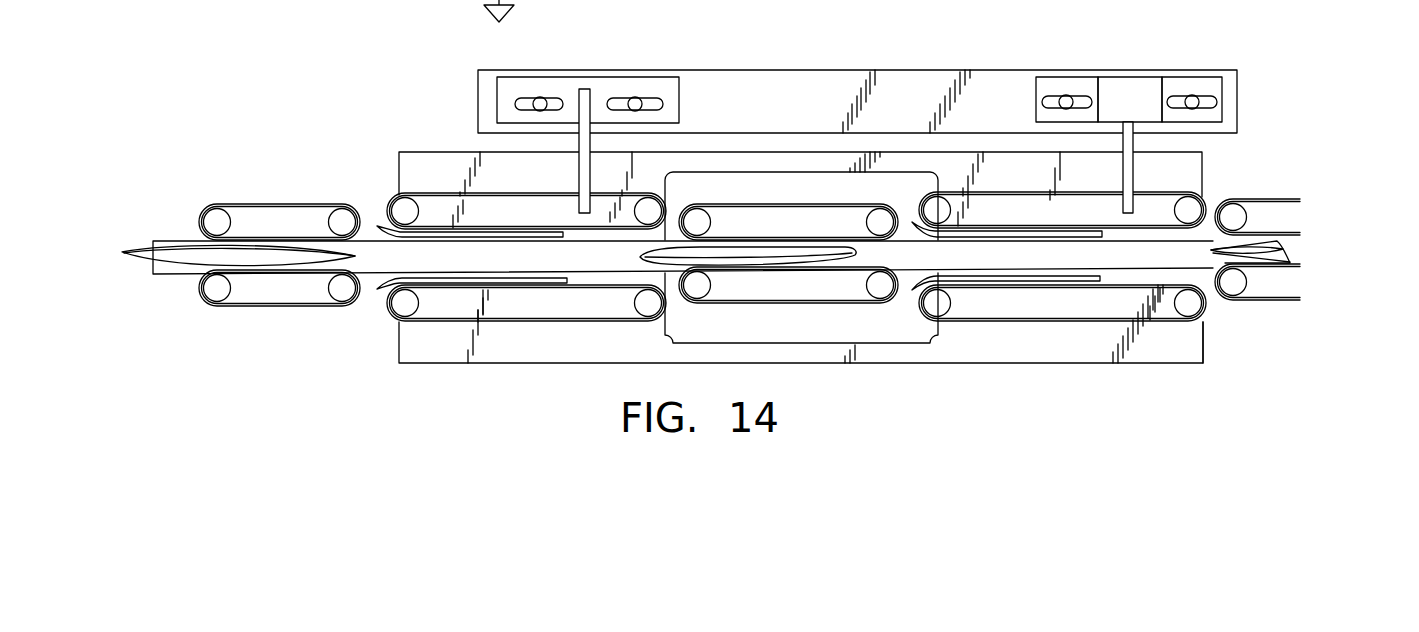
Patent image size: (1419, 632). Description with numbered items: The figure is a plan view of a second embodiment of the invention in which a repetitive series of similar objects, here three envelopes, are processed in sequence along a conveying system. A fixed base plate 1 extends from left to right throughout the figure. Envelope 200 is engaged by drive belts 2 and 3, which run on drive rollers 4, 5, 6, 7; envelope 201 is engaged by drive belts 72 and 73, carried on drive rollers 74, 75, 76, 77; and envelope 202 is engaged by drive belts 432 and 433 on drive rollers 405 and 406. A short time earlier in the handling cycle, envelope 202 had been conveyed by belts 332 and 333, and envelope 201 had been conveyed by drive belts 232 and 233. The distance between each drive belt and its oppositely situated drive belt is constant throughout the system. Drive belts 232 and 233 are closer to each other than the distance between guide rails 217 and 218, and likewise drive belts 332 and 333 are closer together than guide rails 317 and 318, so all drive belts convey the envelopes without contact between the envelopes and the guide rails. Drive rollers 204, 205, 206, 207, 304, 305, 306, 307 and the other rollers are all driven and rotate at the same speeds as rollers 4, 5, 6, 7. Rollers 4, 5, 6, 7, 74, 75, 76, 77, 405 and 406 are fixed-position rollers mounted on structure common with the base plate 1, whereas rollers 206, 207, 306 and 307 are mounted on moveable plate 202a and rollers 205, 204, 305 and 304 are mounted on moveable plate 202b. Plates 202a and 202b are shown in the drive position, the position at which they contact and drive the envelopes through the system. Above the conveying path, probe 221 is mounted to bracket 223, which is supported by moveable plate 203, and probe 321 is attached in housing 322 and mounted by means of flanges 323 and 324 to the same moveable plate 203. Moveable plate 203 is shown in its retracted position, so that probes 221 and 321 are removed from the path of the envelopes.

The fixed base plate 1 is at (172, 248).
The drive belt 2 is at (312, 238).
The drive belt 3 is at (312, 298).
The drive roller 4 is at (342, 290).
The drive roller 5 is at (218, 290).
The drive roller 6 is at (218, 220).
The drive roller 7 is at (343, 220).
The drive belt 72 is at (802, 238).
The drive belt 73 is at (755, 268).
The drive roller 74 is at (888, 283).
The drive roller 75 is at (710, 292).
The drive roller 76 is at (712, 222).
The drive roller 77 is at (878, 218).
The envelope 200 is at (197, 262).
The envelope 201 is at (790, 260).
The envelope 202 is at (1290, 262).
The moveable plate 202a is at (428, 165).
The moveable plate 202b is at (585, 353).
The moveable plate 203 is at (898, 78).
The drive roller 204 is at (668, 303).
The drive roller 205 is at (402, 308).
The drive roller 206 is at (403, 211).
The drive roller 207 is at (668, 207).
The guide rail 217 is at (430, 236).
The guide rail 218 is at (498, 276).
The probe 221 is at (580, 165).
The bracket 223 is at (622, 78).
The drive belt 232 is at (562, 226).
The drive belt 233 is at (572, 297).
The drive roller 304 is at (1204, 315).
The drive roller 305 is at (940, 303).
The drive roller 306 is at (950, 212).
The drive roller 307 is at (1195, 213).
The guide rail 317 is at (1018, 236).
The guide rail 318 is at (1085, 277).
The probe 321 is at (1133, 176).
The housing 322 is at (1130, 90).
The flange 323 is at (1103, 42).
The flange 324 is at (1195, 83).
The drive belt 332 is at (1044, 228).
The drive belt 333 is at (992, 321).
The drive roller 405 is at (1240, 285).
The drive roller 406 is at (1240, 220).
The drive belt 432 is at (1277, 205).
The drive belt 433 is at (1283, 300).